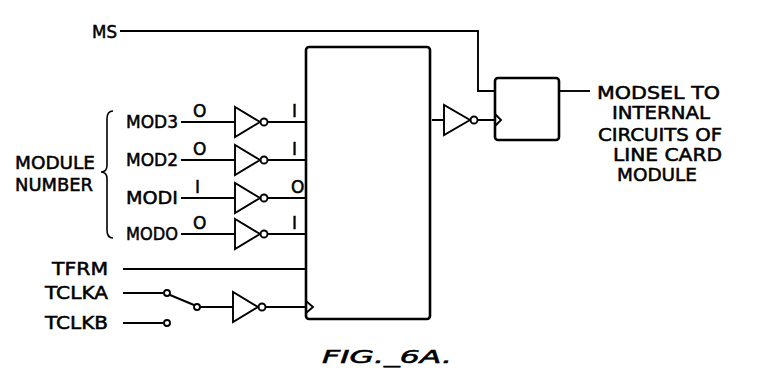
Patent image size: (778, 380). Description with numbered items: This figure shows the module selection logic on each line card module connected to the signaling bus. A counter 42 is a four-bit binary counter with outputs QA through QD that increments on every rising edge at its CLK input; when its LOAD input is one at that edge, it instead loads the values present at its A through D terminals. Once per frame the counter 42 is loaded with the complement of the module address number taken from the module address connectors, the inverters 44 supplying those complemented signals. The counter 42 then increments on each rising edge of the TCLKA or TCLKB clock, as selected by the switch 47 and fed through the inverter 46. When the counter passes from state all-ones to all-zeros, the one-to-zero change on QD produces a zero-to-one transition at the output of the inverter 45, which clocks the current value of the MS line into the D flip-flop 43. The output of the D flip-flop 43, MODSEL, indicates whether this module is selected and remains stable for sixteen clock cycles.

The counter 42 is at (431, 284).
The D flip-flop 43 is at (535, 77).
The inverter 44 is at (241, 103).
The inverter 45 is at (453, 130).
The inverter 46 is at (246, 299).
The switch 47 is at (176, 318).